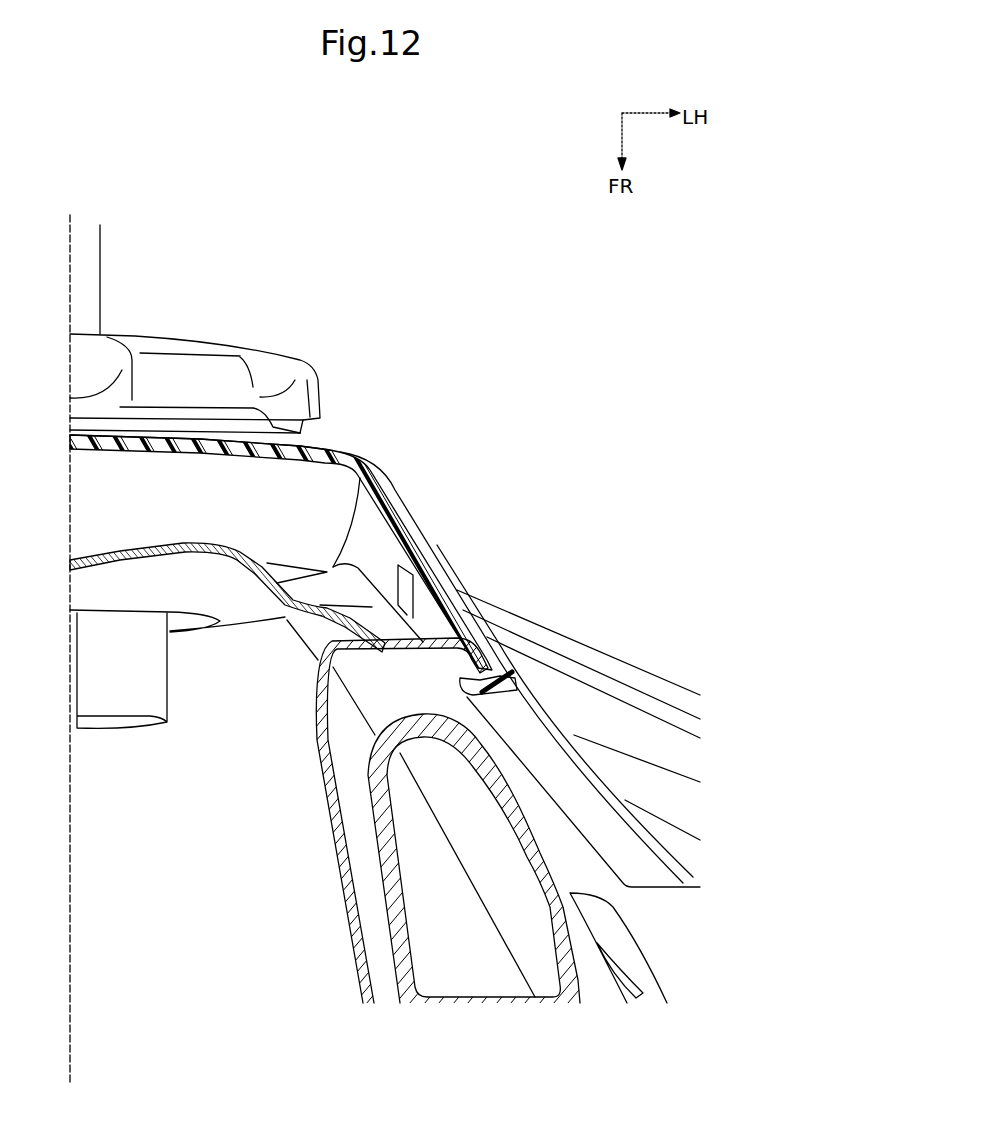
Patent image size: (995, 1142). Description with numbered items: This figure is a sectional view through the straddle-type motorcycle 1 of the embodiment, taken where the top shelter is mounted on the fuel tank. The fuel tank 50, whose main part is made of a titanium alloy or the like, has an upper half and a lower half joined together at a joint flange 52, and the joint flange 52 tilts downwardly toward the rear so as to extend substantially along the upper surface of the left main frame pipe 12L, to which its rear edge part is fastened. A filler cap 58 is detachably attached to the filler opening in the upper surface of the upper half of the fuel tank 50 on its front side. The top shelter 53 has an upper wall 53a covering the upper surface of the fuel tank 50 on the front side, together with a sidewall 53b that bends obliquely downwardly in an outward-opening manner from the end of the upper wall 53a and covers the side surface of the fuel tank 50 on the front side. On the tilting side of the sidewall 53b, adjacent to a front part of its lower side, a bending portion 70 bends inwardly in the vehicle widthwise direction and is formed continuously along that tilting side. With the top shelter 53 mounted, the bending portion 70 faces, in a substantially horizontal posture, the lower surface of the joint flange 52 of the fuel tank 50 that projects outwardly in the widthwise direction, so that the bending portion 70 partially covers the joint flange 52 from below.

The motorcycle 1 is at (410, 290).
The filler cap 58 is at (168, 336).
The fuel tank 50 is at (184, 535).
The top shelter 53 is at (333, 450).
The upper wall 53a is at (263, 440).
The sidewall 53b is at (400, 493).
The joint flange 52 is at (412, 638).
The bending portion 70 is at (487, 668).
The main frame pipe 12L is at (540, 855).